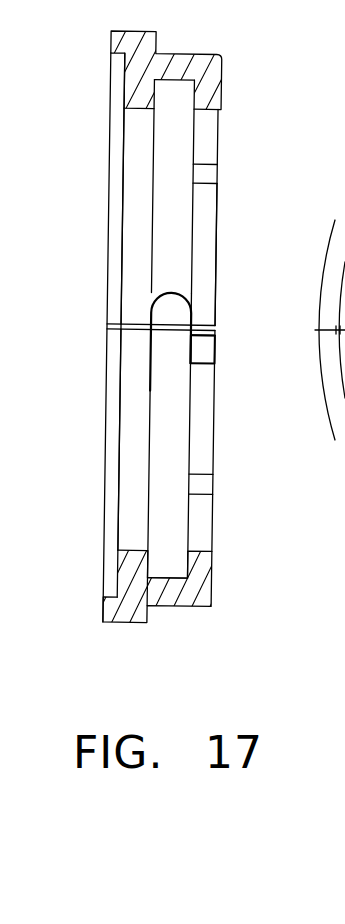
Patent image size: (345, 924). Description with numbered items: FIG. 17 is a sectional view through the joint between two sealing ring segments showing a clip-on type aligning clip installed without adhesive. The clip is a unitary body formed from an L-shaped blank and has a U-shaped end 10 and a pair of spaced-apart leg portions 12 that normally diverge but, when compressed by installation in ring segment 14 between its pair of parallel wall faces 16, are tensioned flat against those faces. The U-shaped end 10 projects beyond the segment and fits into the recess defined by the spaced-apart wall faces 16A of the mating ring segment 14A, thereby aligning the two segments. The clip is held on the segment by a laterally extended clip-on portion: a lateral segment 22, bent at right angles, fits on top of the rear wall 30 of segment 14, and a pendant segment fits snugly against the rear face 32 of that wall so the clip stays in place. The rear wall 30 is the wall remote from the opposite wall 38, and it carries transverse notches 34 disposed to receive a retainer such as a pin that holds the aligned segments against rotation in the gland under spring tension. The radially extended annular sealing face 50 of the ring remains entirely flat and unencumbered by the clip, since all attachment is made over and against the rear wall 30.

The U-shaped end 10 is at (166, 284).
The leg portions 12 is at (163, 357).
The ring segment 14 is at (228, 508).
The mating ring segment 14A is at (99, 157).
The wall faces 16 is at (150, 468).
The wall faces 16A is at (162, 186).
The lateral segment 22 is at (208, 351).
The rear wall 30 is at (205, 212).
The rear face 32 is at (218, 380).
The transverse notches 34 is at (227, 167).
The wall 38 is at (140, 292).
The annular sealing face 50 is at (110, 94).